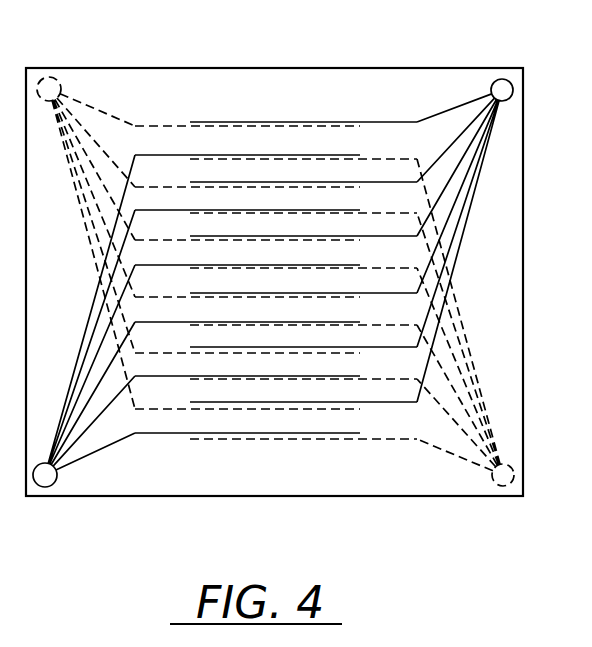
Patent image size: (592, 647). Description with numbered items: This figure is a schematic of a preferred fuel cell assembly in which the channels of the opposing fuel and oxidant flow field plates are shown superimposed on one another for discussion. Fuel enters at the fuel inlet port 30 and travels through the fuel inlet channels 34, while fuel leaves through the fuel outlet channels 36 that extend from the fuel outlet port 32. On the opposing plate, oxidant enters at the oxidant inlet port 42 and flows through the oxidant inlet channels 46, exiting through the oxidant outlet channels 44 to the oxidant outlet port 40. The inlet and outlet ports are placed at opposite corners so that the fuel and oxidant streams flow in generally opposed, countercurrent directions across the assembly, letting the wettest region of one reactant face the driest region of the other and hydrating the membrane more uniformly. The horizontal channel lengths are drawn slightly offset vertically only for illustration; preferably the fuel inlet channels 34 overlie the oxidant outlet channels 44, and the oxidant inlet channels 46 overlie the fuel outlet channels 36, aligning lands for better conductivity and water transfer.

The fuel inlet port 30 is at (50, 488).
The fuel outlet port 32 is at (508, 80).
The fuel inlet channels 34 is at (207, 152).
The fuel outlet channels 36 is at (395, 120).
The oxidant outlet port 40 is at (508, 486).
The oxidant inlet port 42 is at (53, 78).
The oxidant outlet channels 44 is at (272, 156).
The oxidant inlet channels 46 is at (315, 124).